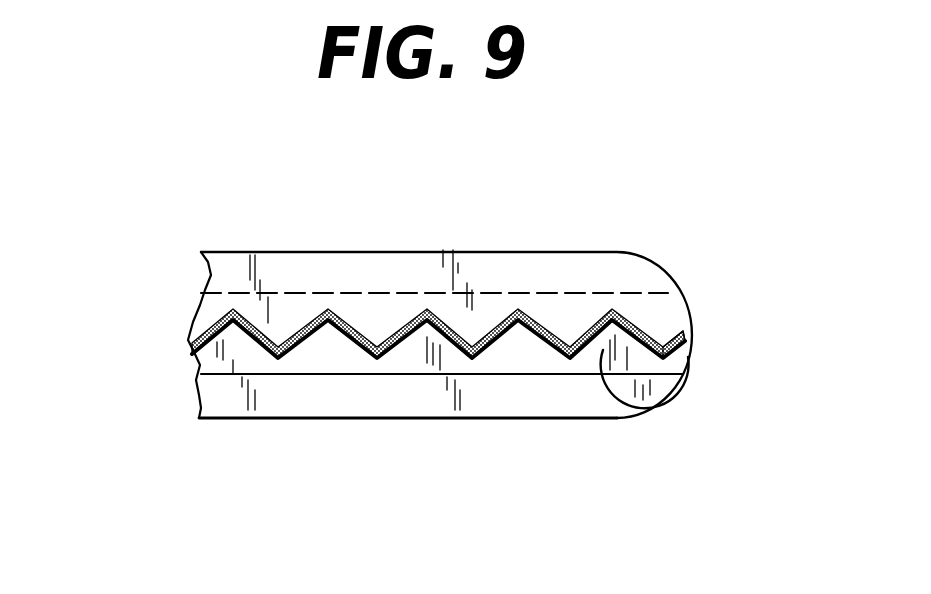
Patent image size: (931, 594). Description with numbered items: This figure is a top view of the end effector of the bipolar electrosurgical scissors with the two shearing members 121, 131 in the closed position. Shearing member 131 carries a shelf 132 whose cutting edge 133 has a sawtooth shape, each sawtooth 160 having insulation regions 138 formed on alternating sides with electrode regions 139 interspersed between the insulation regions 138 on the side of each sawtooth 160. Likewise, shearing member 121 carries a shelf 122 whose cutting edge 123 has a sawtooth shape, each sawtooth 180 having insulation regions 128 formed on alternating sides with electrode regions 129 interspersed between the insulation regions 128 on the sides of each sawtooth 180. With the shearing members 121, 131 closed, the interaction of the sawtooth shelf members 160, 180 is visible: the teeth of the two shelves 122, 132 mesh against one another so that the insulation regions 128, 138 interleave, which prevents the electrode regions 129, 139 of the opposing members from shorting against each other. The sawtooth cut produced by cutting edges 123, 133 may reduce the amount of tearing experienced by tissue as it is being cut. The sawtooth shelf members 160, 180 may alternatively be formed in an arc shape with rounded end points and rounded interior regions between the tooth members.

The shearing member 121 is at (523, 405).
The shelf 122 is at (331, 365).
The cutting edge 123 is at (640, 345).
The insulation regions 128 is at (307, 327).
The electrode regions 129 is at (542, 337).
The shearing member 131 is at (553, 278).
The shelf 132 is at (382, 302).
The cutting edge 133 is at (688, 360).
The insulation regions 138 is at (330, 330).
The electrode regions 139 is at (487, 346).
The sawtooth 160 is at (285, 323).
The sawtooth 180 is at (636, 409).